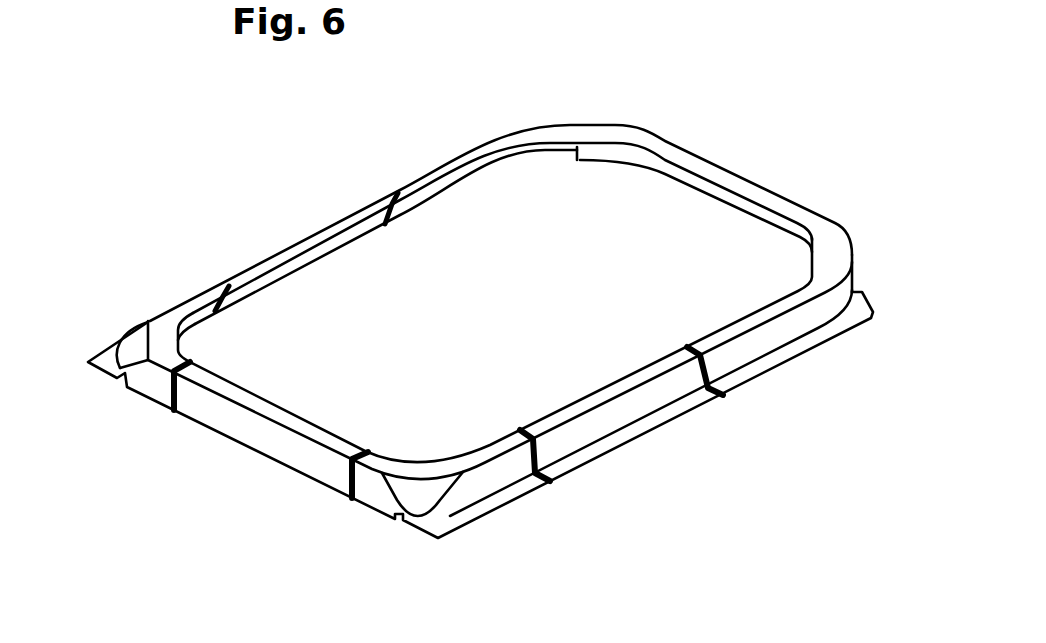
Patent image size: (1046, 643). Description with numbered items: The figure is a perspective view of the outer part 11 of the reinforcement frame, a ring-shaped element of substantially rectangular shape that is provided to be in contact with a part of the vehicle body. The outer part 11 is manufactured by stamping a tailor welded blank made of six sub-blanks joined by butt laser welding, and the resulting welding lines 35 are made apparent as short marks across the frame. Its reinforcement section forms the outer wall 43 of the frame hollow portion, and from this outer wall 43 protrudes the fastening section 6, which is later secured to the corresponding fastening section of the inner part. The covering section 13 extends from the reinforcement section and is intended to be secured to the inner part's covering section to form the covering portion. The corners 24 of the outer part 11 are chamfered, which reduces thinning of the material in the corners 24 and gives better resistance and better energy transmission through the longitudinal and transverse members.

The fastening section 6 is at (827, 334).
The outer part 11 is at (303, 176).
The covering section 13 is at (828, 258).
The corner 24 is at (565, 127).
The welding line 35 is at (550, 480).
The outer wall 43 is at (642, 402).